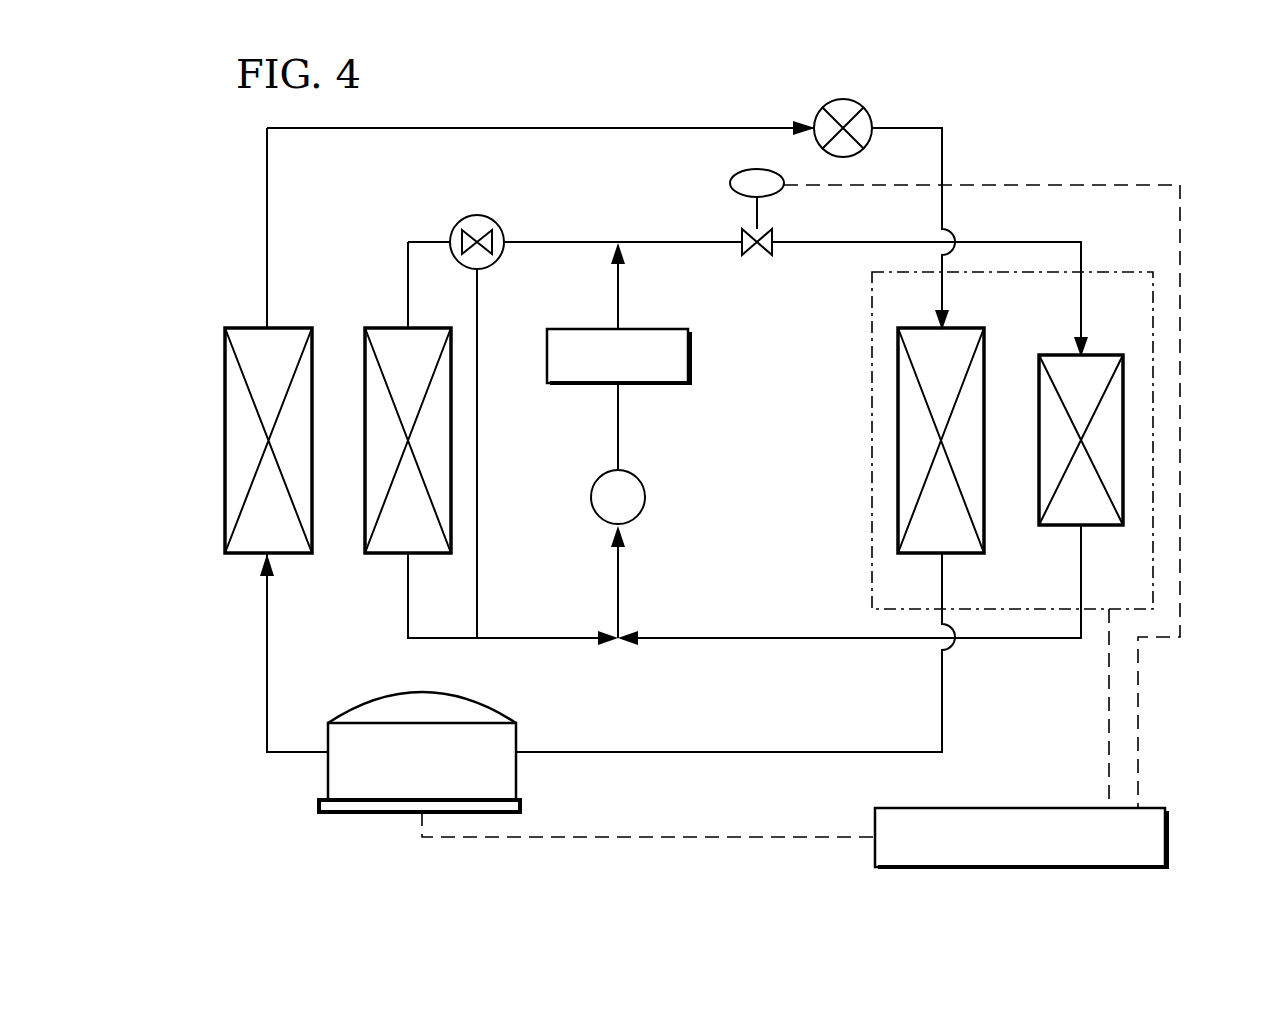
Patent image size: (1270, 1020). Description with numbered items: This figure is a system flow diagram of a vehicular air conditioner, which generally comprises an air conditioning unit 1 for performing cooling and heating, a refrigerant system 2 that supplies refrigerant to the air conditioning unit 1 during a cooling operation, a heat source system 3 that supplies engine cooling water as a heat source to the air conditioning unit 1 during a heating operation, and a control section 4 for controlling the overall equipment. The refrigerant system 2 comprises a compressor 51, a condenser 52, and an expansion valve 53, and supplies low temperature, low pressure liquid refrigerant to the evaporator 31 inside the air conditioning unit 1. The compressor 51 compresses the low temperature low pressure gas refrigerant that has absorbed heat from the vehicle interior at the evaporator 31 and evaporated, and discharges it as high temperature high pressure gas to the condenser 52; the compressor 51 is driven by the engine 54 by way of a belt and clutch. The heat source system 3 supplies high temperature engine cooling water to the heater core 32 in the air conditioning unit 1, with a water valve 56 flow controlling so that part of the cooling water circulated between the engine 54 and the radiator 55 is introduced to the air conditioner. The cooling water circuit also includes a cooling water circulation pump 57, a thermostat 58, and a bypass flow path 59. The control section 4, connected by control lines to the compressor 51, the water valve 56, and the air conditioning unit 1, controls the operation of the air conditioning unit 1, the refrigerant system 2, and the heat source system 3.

The air conditioning unit 1 is at (858, 290).
The refrigerant system 2 is at (598, 112).
The heat source system 3 is at (598, 226).
The control section 4 is at (1168, 835).
The evaporator 31 is at (897, 385).
The heater core 32 is at (1125, 442).
The compressor 51 is at (512, 735).
The condenser 52 is at (284, 327).
The expansion valve 53 is at (845, 100).
The engine 54 is at (690, 352).
The radiator 55 is at (377, 553).
The water valve 56 is at (770, 237).
The cooling water circulation pump 57 is at (646, 496).
The thermostat 58 is at (479, 215).
The bypass flow path 59 is at (480, 553).